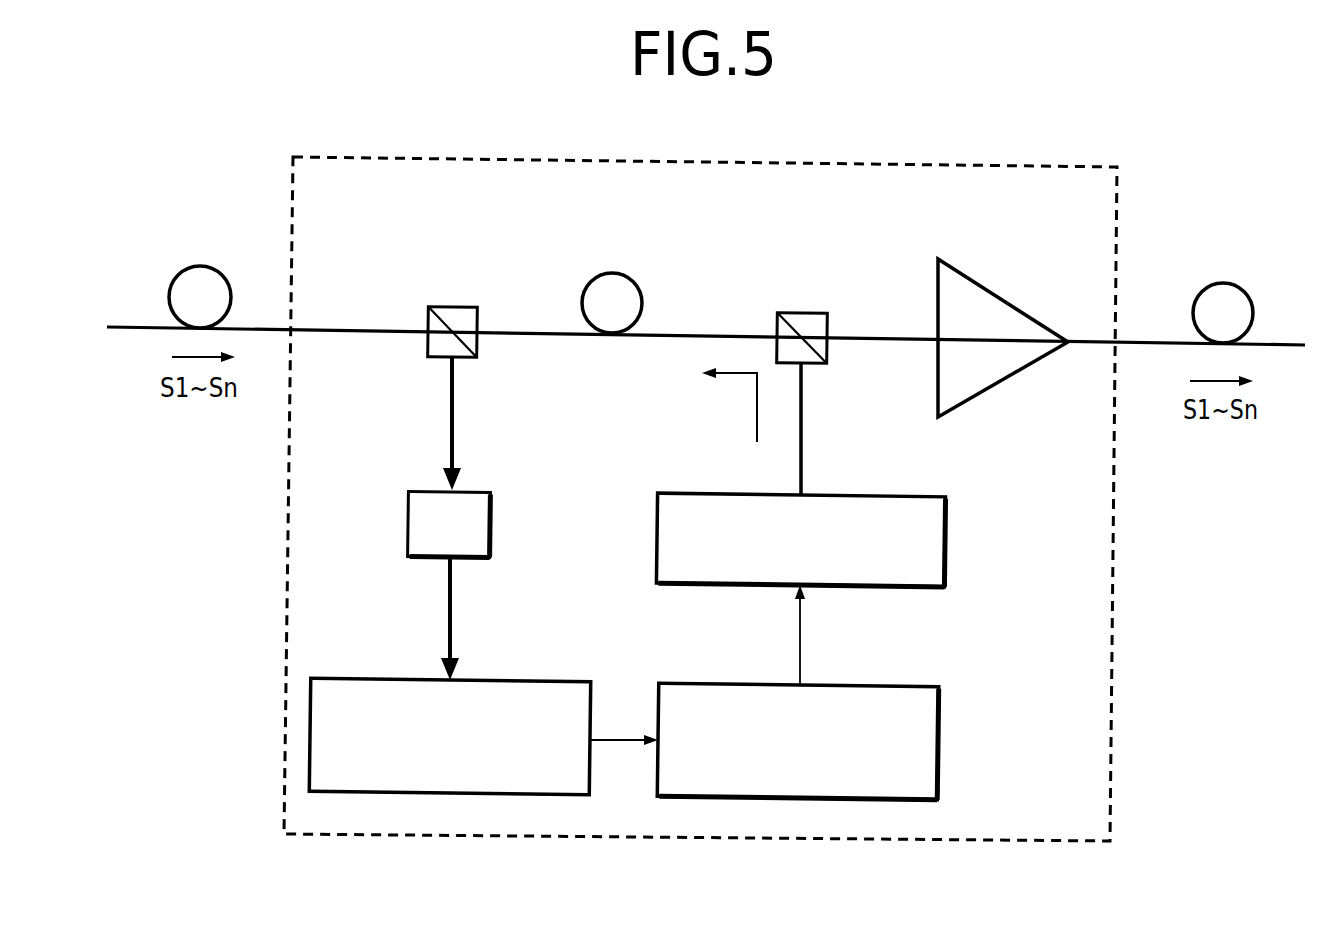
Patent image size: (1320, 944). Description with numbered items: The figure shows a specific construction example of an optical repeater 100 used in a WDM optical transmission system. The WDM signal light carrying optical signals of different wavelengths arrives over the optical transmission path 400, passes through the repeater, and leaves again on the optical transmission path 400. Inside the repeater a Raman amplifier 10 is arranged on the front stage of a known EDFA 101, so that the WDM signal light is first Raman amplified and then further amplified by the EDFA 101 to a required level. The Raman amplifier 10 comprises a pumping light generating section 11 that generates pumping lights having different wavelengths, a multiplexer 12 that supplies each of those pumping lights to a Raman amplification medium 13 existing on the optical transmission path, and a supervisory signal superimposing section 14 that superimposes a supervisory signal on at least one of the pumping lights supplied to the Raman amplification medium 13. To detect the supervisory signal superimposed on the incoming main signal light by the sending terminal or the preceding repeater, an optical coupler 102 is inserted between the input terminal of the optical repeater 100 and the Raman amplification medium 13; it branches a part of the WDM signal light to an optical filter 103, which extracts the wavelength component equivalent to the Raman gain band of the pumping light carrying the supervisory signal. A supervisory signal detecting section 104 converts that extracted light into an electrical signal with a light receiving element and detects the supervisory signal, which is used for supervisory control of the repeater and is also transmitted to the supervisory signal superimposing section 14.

The optical repeater 100 is at (995, 163).
The Raman amplifier 10 is at (681, 503).
The pumping light generating section 11 is at (858, 495).
The multiplexer 12 is at (802, 312).
The Raman amplification medium 13 is at (612, 273).
The supervisory signal superimposing section 14 is at (850, 685).
The EDFA 101 is at (995, 290).
The optical coupler 102 is at (452, 305).
The optical filter 103 is at (490, 528).
The supervisory signal detecting section 104 is at (494, 680).
The optical transmission path 400 is at (204, 266).